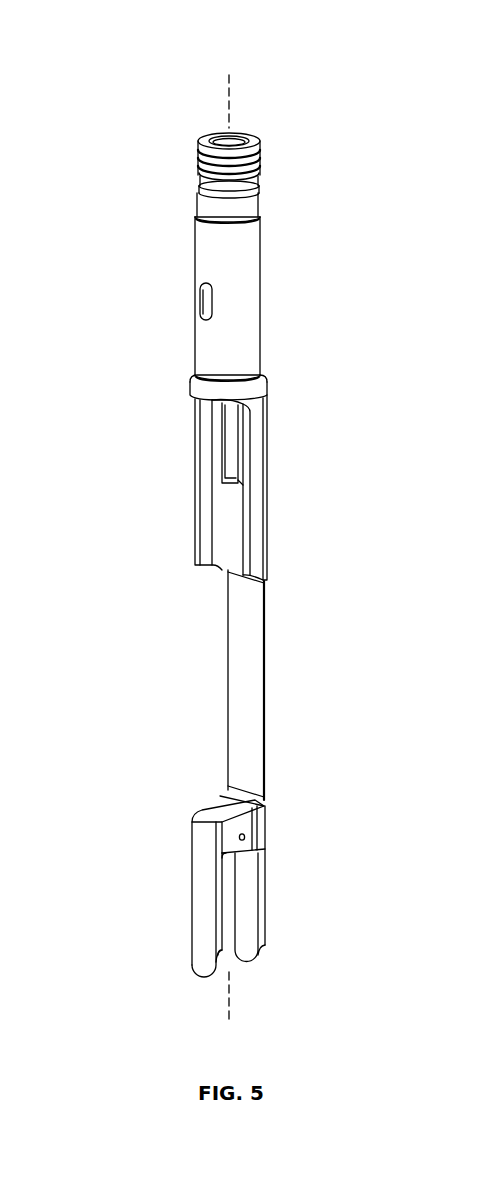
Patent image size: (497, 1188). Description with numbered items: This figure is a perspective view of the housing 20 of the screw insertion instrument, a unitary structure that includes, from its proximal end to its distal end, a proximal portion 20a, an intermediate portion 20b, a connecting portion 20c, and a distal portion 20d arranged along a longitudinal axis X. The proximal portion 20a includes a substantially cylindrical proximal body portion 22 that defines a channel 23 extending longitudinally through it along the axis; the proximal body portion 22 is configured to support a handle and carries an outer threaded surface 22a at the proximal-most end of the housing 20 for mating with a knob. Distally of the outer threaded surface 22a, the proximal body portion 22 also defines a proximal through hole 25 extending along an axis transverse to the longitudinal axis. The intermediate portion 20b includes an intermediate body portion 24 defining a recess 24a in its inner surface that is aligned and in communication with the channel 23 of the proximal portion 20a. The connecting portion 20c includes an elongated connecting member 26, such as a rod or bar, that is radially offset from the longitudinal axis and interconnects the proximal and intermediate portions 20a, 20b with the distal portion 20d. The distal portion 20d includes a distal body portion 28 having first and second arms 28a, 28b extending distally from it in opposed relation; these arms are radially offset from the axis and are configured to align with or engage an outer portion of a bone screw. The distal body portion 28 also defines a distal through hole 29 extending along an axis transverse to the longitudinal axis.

The housing 20 is at (135, 200).
The proximal portion 20a is at (303, 280).
The intermediate portion 20b is at (303, 500).
The connecting portion 20c is at (303, 692).
The distal portion 20d is at (302, 868).
The proximal body portion 22 is at (195, 263).
The outer threaded surface 22a is at (257, 163).
The channel 23 is at (228, 143).
The intermediate body portion 24 is at (195, 543).
The recess 24a is at (225, 513).
The proximal through hole 25 is at (203, 308).
The elongated connecting member 26 is at (228, 685).
The distal body portion 28 is at (208, 805).
The first arm 28a is at (205, 922).
The second arm 28b is at (243, 930).
The distal through hole 29 is at (245, 835).